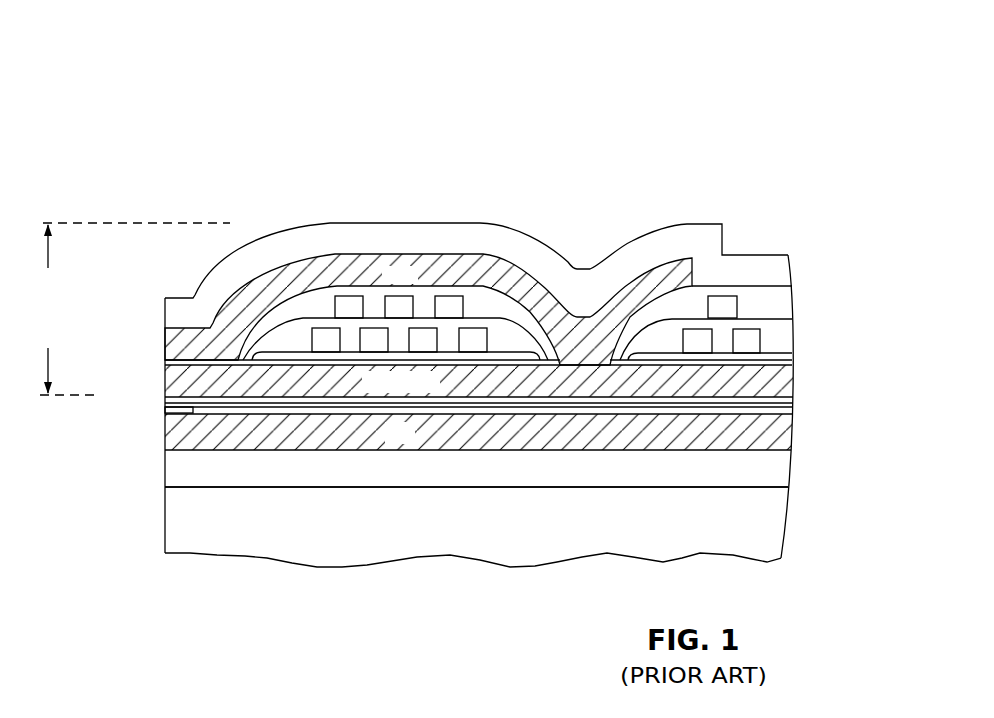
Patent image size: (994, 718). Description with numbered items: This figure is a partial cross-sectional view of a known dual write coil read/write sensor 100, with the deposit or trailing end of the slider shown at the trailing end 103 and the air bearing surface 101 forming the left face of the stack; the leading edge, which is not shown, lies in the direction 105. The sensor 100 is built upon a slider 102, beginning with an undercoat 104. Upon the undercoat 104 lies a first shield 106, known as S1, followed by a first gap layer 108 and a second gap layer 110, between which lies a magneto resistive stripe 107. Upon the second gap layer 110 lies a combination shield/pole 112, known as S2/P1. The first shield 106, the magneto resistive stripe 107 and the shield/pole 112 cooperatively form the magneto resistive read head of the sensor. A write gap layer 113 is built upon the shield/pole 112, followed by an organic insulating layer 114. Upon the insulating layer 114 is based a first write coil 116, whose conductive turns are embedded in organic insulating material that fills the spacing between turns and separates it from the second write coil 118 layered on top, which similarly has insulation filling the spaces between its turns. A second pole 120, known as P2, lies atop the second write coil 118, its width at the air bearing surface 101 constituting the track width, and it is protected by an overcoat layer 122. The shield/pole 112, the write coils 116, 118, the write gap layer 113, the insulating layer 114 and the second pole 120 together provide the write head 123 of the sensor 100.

The dual write coil read/write sensor 100 is at (373, 90).
The air bearing surface 101 is at (158, 541).
The slider 102 is at (476, 527).
The trailing end 103 is at (615, 167).
The undercoat 104 is at (780, 467).
The direction 105 is at (463, 578).
The first shield 106 is at (780, 437).
The magneto resistive stripe 107 is at (178, 413).
The first gap layer 108 is at (778, 413).
The second gap layer 110 is at (780, 403).
The shield/pole 112 is at (780, 385).
The write gap layer 113 is at (290, 362).
The organic insulating layer 114 is at (253, 350).
The first write coil 116 is at (488, 340).
The second write coil 118 is at (465, 306).
The second pole 120 is at (363, 262).
The overcoat layer 122 is at (780, 271).
The write head 123 is at (123, 309).